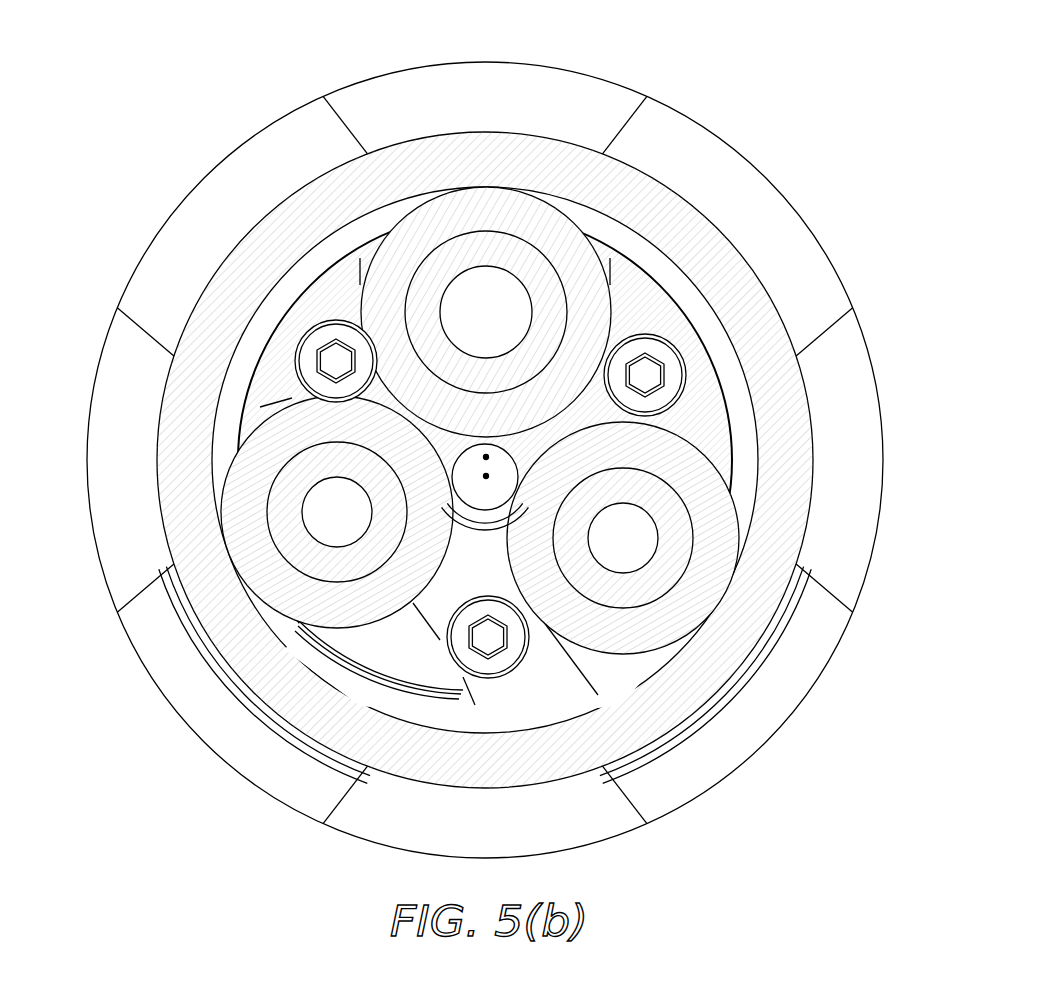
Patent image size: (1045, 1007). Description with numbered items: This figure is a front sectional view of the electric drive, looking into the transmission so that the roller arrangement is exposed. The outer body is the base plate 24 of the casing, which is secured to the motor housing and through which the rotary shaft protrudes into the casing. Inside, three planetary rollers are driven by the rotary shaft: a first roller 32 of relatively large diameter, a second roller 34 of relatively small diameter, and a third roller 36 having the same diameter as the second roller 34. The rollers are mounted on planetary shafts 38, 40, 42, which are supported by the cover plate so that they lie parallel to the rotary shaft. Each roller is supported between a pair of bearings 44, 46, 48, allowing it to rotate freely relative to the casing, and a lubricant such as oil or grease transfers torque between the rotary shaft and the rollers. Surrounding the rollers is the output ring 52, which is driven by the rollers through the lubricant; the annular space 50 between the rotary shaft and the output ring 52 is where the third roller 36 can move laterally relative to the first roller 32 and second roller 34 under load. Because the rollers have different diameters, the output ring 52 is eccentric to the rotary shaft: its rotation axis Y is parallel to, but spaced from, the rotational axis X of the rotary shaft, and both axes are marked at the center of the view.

The base plate 24 is at (714, 153).
The first roller 32 is at (513, 205).
The second roller 34 is at (718, 571).
The third roller 36 is at (248, 563).
The planetary shaft 38 is at (486, 312).
The planetary shaft 40 is at (623, 538).
The planetary shaft 42 is at (337, 512).
The bearing 44 is at (463, 250).
The bearing 46 is at (660, 582).
The bearing 48 is at (278, 520).
The annular space 50 is at (748, 447).
The output ring 52 is at (766, 310).
The rotational axis of the rotary shaft X is at (486, 476).
The rotation axis of the output ring Y is at (486, 457).